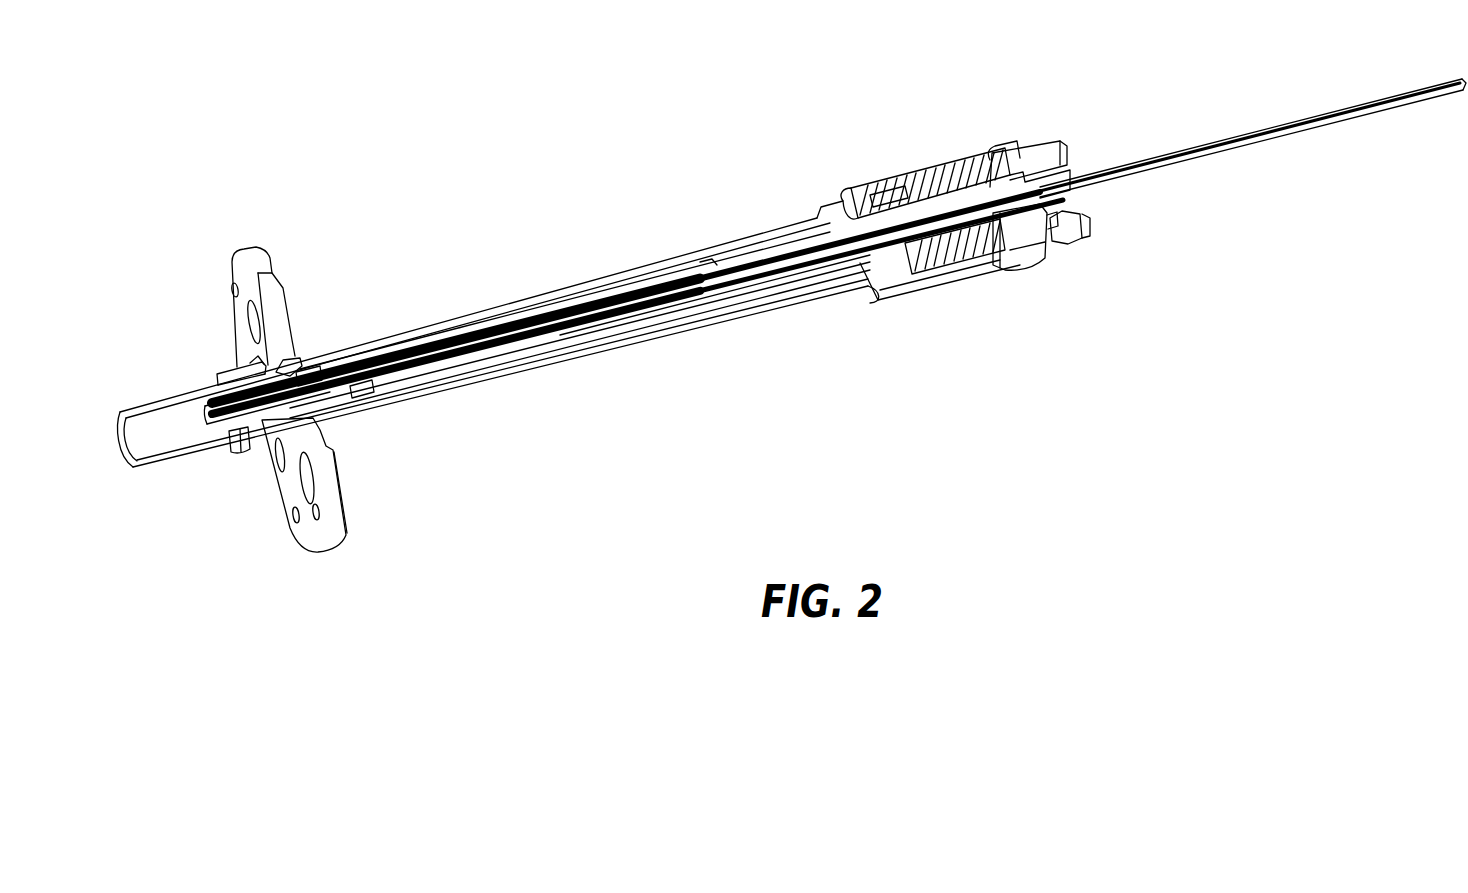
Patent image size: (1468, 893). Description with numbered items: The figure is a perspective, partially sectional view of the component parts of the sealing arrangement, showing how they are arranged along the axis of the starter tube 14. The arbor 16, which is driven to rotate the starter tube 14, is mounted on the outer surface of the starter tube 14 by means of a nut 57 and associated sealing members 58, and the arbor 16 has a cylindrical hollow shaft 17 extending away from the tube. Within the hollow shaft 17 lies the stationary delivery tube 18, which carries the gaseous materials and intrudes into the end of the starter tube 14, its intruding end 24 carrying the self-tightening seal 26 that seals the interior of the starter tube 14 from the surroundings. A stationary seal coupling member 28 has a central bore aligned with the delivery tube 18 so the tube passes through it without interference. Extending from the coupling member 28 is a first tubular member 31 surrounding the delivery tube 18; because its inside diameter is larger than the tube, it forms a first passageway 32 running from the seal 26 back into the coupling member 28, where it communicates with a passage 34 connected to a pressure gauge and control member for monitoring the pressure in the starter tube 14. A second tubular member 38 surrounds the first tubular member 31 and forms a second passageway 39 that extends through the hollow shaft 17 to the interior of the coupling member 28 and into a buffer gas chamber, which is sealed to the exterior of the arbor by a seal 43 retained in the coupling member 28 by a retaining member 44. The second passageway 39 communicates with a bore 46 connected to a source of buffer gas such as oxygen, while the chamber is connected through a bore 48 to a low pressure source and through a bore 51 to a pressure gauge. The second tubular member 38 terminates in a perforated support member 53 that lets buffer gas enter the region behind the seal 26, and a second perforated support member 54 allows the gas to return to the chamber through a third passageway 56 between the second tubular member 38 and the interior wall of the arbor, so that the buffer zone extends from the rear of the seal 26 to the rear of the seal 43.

The starter tube 14 is at (607, 353).
The arbor 16 is at (237, 323).
The hollow shaft 17 is at (760, 227).
The delivery tube 18 is at (1240, 133).
The intruding end 24 is at (200, 427).
The seal 26 is at (277, 423).
The seal coupling member 28 is at (1000, 143).
The first tubular member 31 is at (300, 377).
The first passageway 32 is at (477, 363).
The passage 34 is at (1000, 223).
The second tubular member 38 is at (543, 310).
The second passageway 39 is at (598, 300).
The seal 43 is at (883, 180).
The retaining member 44 is at (822, 202).
The bore 46 is at (913, 177).
The bore 48 is at (953, 187).
The bore 51 is at (1045, 246).
The perforated support member 53 is at (360, 390).
The second perforated support member 54 is at (400, 347).
The third passageway 56 is at (657, 275).
The nut 57 is at (232, 367).
The sealing members 58 is at (287, 363).